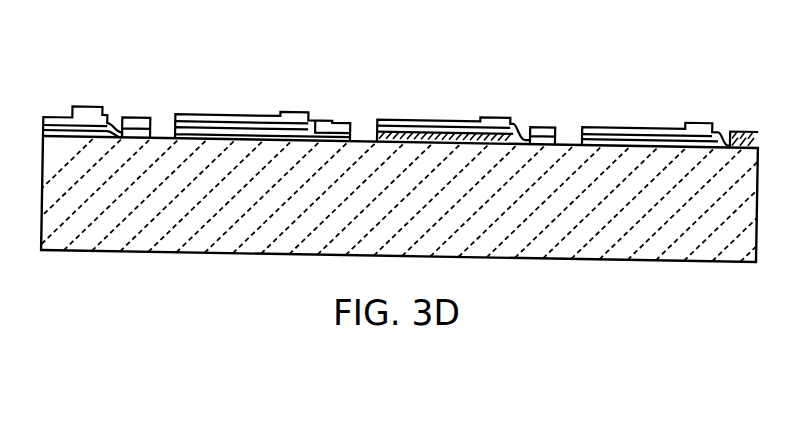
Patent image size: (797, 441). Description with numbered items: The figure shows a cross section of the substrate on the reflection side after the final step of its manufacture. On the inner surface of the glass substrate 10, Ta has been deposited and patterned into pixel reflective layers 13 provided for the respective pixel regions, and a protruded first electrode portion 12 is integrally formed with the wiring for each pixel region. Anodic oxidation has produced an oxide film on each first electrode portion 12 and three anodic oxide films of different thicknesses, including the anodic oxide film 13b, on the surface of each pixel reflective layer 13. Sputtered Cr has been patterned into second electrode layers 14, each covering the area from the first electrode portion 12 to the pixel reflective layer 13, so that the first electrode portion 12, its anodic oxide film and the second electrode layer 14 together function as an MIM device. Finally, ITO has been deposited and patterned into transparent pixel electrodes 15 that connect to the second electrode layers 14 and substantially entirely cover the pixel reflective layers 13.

The glass substrate 10 is at (158, 252).
The first electrode portion 12 is at (548, 148).
The pixel reflective layer 13 is at (263, 138).
The anodic oxide film 13b is at (248, 113).
The second electrode layer 14 is at (540, 127).
The transparent pixel electrode 15 is at (60, 108).